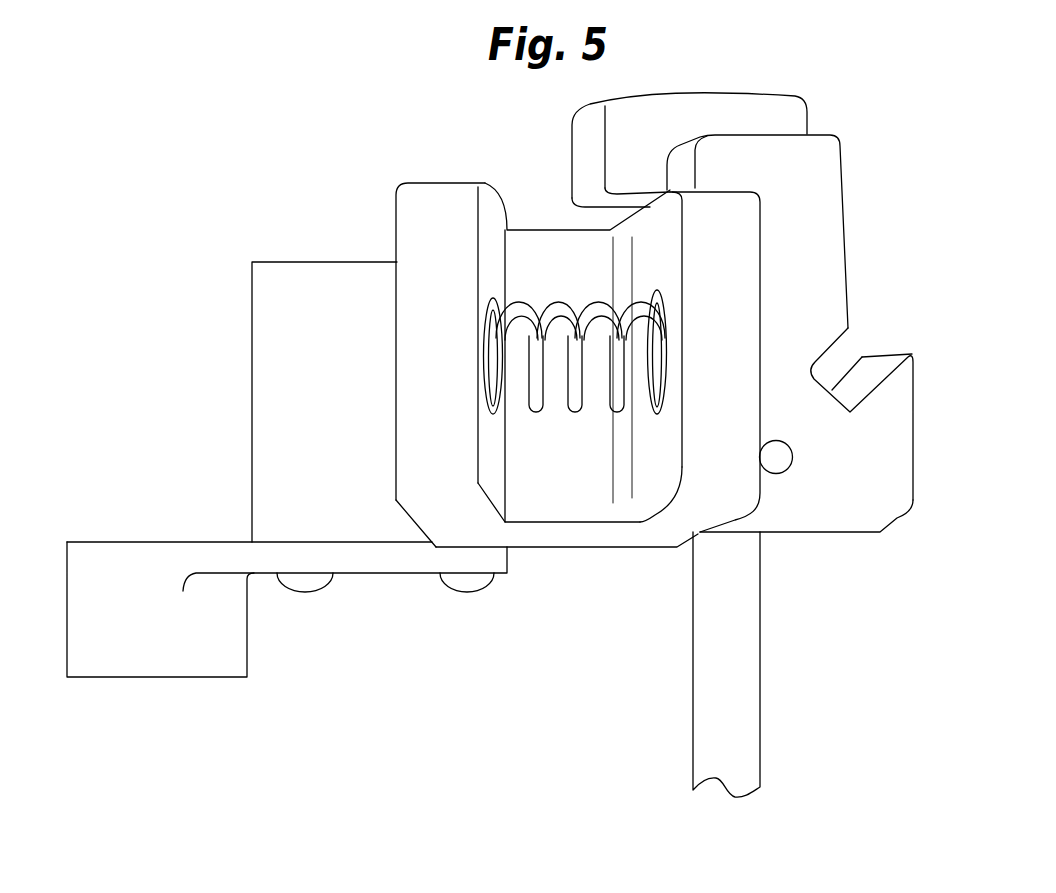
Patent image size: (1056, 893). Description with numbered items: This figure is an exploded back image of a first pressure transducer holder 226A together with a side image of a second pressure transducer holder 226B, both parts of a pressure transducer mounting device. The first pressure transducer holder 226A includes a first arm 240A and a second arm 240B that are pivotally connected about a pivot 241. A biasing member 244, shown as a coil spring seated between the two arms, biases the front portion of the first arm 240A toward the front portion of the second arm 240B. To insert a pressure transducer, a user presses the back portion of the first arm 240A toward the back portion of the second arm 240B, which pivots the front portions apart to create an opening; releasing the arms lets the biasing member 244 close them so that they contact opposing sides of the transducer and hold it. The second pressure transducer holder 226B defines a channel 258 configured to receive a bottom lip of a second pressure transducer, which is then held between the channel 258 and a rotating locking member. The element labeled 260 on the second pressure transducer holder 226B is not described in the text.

The first pressure transducer holder 226A is at (382, 404).
The second pressure transducer holder 226B is at (784, 426).
The first arm 240A is at (433, 200).
The second arm 240B is at (700, 482).
The pivot 241 is at (566, 377).
The biasing member 244 is at (585, 417).
The channel 258 is at (875, 355).
The tab 260 is at (731, 94).